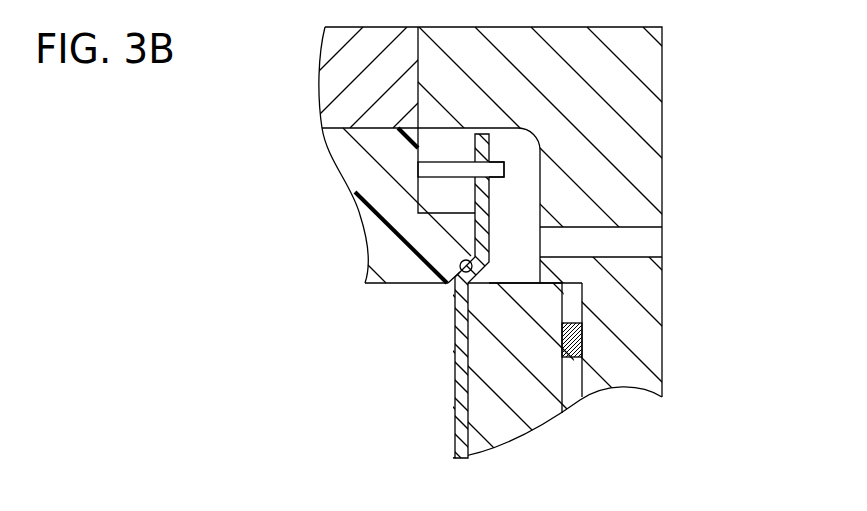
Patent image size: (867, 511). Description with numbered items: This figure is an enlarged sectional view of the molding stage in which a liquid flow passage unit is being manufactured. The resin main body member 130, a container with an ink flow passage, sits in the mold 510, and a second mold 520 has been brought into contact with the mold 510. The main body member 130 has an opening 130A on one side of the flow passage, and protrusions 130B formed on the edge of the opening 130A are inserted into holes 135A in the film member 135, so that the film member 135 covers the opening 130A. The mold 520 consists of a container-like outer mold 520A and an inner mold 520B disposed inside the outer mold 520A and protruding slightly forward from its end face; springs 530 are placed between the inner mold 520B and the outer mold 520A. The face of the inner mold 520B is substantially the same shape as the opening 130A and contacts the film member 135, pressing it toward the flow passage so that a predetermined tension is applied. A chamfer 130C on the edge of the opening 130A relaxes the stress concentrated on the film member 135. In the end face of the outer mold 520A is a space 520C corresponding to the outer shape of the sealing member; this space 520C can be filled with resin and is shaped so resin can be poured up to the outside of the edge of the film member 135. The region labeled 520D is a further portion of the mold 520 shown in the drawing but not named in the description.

The main body member 130 is at (398, 220).
The opening 130A is at (417, 285).
The protrusions 130B is at (427, 170).
The chamfer 130C is at (462, 258).
The film member 135 is at (460, 400).
The holes 135A is at (505, 168).
The mold 510 is at (343, 82).
The mold 520 is at (709, 334).
The outer mold 520A is at (648, 116).
The inner mold 520B is at (533, 400).
The space 520C is at (527, 180).
The slot of housing 520D is at (632, 256).
The springs 530 is at (583, 348).